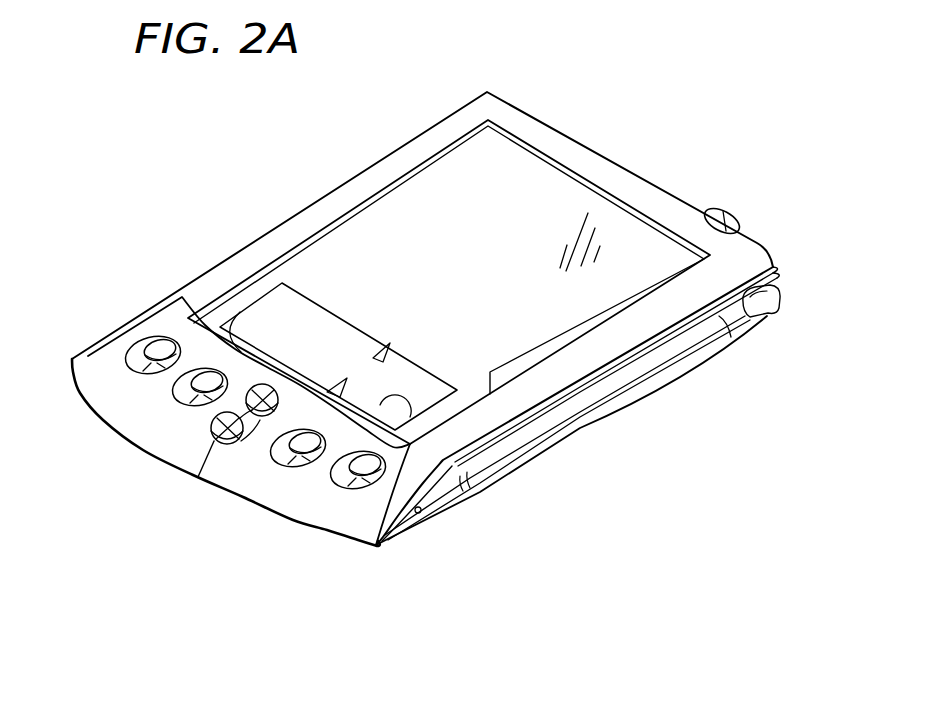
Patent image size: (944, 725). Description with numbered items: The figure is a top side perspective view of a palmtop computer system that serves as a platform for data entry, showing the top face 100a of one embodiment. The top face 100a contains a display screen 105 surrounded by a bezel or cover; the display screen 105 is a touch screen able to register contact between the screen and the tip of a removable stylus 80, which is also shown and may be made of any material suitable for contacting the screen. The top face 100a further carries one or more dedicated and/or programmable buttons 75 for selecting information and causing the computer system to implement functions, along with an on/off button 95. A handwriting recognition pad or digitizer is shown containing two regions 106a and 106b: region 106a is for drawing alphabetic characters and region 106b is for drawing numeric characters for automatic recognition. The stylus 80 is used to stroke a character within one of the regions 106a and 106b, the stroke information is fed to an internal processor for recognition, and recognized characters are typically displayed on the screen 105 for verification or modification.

The top face 100a is at (239, 111).
The display screen 105 is at (507, 188).
The region 106a is at (313, 332).
The region 106b is at (397, 387).
The buttons 75 is at (160, 350).
The stylus 80 is at (603, 395).
The on/off button 95 is at (737, 210).